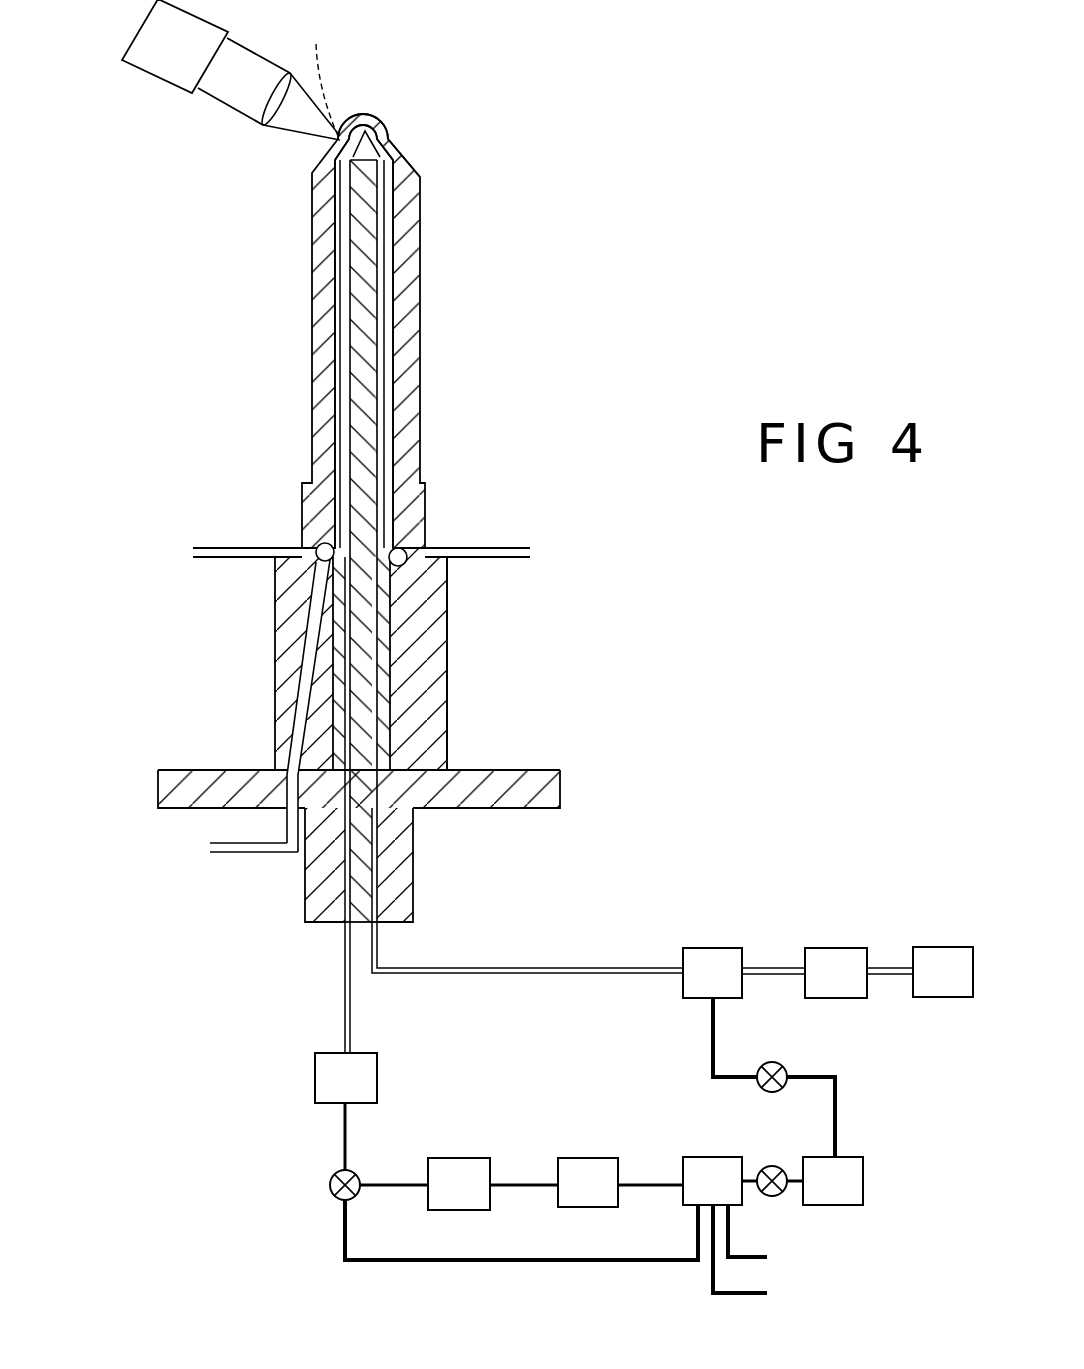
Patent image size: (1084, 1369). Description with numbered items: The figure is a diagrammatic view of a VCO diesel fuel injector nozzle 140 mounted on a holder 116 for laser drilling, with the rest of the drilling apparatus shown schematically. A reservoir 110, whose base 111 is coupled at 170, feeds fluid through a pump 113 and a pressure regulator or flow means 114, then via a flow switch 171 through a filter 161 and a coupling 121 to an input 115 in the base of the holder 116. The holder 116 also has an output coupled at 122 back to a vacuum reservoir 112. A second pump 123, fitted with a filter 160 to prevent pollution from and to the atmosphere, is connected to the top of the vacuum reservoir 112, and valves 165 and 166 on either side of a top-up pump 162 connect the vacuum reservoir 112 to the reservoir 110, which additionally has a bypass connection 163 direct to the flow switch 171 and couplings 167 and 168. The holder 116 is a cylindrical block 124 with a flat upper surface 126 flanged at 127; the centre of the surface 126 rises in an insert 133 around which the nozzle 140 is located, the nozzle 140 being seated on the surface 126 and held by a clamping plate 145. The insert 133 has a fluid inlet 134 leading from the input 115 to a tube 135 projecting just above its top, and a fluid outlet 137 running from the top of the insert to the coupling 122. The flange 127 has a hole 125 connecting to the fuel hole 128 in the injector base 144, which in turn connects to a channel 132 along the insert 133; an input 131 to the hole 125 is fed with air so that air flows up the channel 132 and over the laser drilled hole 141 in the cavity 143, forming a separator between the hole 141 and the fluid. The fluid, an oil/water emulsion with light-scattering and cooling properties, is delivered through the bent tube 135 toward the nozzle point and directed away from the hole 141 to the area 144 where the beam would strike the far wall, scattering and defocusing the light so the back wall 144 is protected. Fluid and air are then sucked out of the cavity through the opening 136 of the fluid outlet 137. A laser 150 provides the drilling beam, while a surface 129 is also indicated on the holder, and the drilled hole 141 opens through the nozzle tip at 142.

The reservoir 110 is at (712, 1181).
The base 111 is at (678, 1190).
The vacuum reservoir 112 is at (712, 973).
The pump 113 is at (588, 1182).
The pressure regulator or flow means 114 is at (459, 1184).
The input 115 is at (352, 927).
The holder 116 is at (413, 852).
The coupling 121 is at (342, 950).
The coupling 122 is at (375, 975).
The second pump 123 is at (804, 973).
The cylindrical block 124 is at (320, 900).
The hole 125 is at (273, 788).
The flat upper surface 126 is at (211, 770).
The flange 127 is at (157, 788).
The fuel hole 128 is at (320, 613).
The flange underside 129 is at (465, 828).
The input 131 is at (215, 862).
The channel 132 is at (330, 294).
The insert 133 is at (348, 243).
The fluid inlet 134 is at (347, 208).
The tube 135 is at (353, 155).
The opening 136 is at (397, 152).
The fluid outlet 137 is at (380, 477).
The VCO diesel fuel injector nozzle 140 is at (383, 368).
The laser drilled hole 141 is at (301, 79).
The tip end 142 is at (360, 115).
The cavity 143 is at (387, 133).
The injector base / back wall area 144 is at (390, 147).
The clamping plate 145 is at (220, 550).
The light source 150 is at (208, 63).
The filter 160 is at (920, 972).
The filter 161 is at (346, 1078).
The top-up pump 162 is at (833, 1181).
The bypass connection 163 is at (521, 1248).
The valve 165 is at (785, 1066).
The valve 166 is at (775, 1177).
The coupling 167 is at (771, 1234).
The coupling 168 is at (763, 1255).
The coupling point 170 is at (582, 1165).
The flow switch 171 is at (354, 1151).